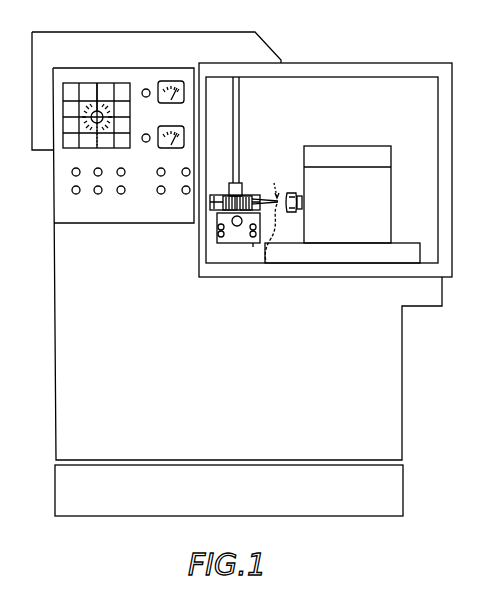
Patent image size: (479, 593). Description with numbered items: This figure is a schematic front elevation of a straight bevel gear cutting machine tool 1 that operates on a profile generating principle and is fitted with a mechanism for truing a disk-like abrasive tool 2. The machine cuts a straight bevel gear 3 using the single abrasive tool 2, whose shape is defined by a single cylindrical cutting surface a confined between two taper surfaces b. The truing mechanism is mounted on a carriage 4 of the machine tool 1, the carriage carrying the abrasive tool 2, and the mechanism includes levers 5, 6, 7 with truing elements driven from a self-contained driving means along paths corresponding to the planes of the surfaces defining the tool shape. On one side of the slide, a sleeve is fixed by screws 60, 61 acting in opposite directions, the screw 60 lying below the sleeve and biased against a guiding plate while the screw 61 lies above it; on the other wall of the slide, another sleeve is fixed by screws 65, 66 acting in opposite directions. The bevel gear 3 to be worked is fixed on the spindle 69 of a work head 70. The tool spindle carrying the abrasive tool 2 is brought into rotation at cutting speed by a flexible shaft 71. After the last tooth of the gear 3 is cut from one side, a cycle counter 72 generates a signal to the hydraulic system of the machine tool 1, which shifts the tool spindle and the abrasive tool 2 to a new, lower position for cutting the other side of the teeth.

The machine tool 1 is at (57, 320).
The disk-like abrasive tool 2 is at (260, 236).
The straight bevel gear 3 is at (304, 218).
The carriage 4 is at (212, 203).
The lever 5 is at (226, 195).
The lever 6 is at (249, 196).
The lever 7 is at (237, 190).
The cylindrical cutting surface a is at (290, 194).
The taper surfaces b is at (273, 182).
The screw 60 is at (217, 240).
The screw 61 is at (218, 229).
The screw 65 is at (252, 247).
The screw 66 is at (251, 227).
The spindle 69 is at (302, 193).
The work head 70 is at (358, 155).
The flexible shaft 71 is at (240, 126).
The cycle counter 72 is at (73, 143).